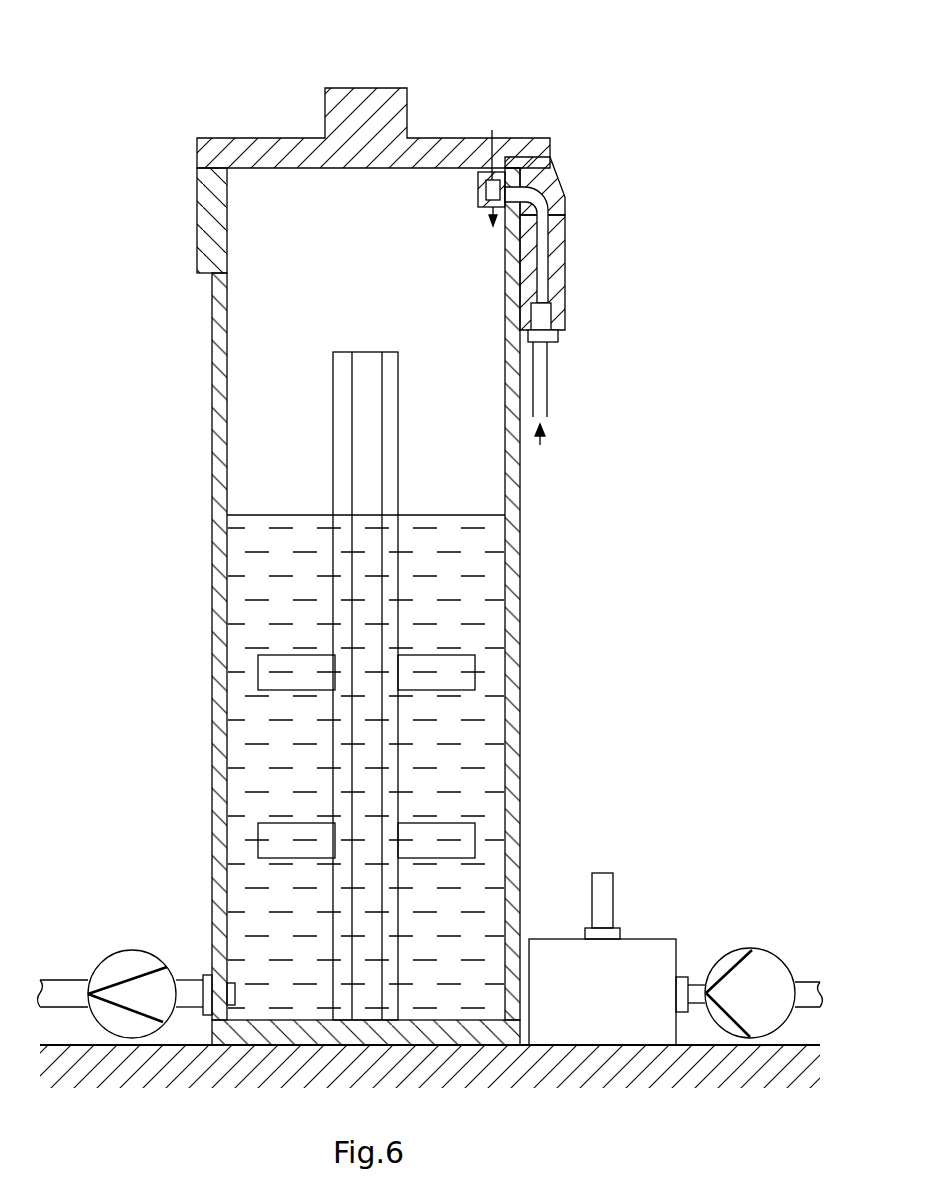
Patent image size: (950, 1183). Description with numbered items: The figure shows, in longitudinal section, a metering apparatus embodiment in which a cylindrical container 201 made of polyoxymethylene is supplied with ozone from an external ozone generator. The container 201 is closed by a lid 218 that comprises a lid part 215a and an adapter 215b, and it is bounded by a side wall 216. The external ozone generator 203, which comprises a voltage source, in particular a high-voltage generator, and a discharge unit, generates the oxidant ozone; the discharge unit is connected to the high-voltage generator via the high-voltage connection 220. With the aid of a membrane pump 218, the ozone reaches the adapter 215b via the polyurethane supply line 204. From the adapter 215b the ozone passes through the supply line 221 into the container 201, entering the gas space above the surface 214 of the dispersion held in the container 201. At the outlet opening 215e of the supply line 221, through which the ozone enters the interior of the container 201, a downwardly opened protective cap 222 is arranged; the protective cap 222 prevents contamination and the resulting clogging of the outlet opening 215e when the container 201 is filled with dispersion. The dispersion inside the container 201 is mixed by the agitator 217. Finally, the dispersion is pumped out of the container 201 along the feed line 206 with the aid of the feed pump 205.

The cylindrical container 201 is at (651, 76).
The external ozone generator 203 is at (621, 1004).
The polyurethane supply line 204 is at (607, 902).
The feed pump 205 is at (122, 950).
The feed line 206 is at (70, 988).
The surface of the dispersion 214 is at (440, 515).
The lid part 215a is at (548, 150).
The adapter 215b is at (566, 250).
The outlet opening 215e is at (492, 130).
The side wall 216 is at (218, 432).
The agitator 217 is at (345, 436).
The lid 218 is at (664, 587).
The high-voltage connection 220 is at (547, 384).
The supply line 221 is at (566, 279).
The protective cap 222 is at (478, 190).